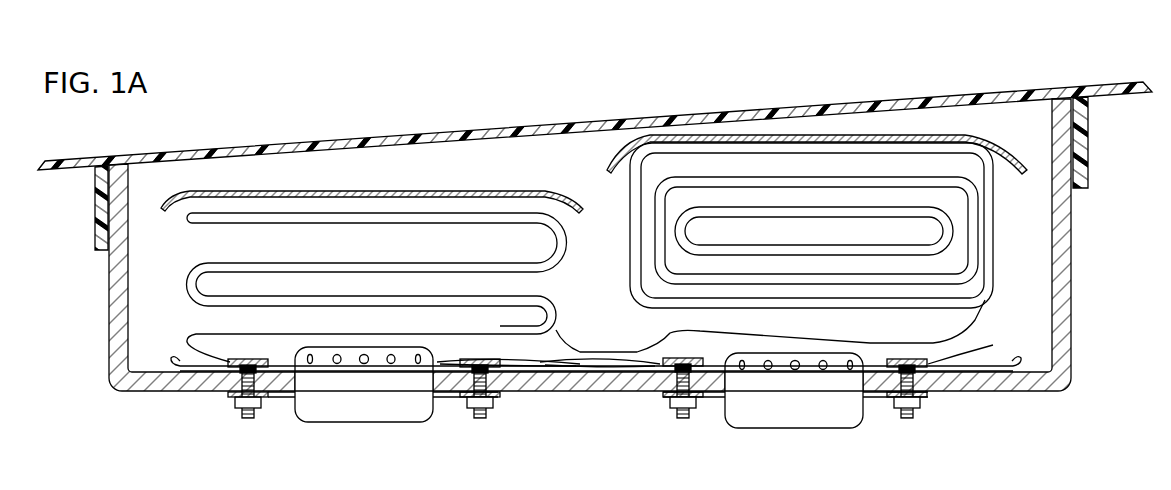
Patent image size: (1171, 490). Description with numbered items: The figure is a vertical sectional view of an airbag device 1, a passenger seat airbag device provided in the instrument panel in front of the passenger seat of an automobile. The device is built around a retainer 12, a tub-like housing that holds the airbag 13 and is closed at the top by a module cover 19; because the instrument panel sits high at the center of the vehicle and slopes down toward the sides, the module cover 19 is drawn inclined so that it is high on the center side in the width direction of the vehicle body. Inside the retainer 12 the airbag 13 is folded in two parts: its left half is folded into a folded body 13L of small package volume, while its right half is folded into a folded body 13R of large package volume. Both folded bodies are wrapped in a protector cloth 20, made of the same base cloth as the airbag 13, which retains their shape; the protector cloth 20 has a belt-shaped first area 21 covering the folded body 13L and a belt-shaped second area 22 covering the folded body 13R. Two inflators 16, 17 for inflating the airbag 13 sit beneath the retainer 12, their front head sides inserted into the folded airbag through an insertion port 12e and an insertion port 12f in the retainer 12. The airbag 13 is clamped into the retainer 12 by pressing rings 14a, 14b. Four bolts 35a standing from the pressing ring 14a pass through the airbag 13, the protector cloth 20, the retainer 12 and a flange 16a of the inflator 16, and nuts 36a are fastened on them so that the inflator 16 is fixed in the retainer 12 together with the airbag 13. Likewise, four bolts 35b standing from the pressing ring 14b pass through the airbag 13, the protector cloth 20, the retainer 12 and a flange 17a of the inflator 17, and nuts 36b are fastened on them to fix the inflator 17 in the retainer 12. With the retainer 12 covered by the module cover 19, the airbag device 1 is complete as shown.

The airbag device 1 is at (600, 267).
The retainer 12 is at (608, 290).
The insertion port 12e is at (312, 388).
The insertion port 12f is at (726, 388).
The airbag 13 is at (594, 252).
The folded body 13L is at (195, 265).
The folded body 13R is at (998, 277).
The pressing ring 14a is at (232, 360).
The pressing ring 14b is at (672, 358).
The inflator 16 is at (402, 425).
The flange 16a is at (294, 392).
The inflator 17 is at (826, 430).
The flange 17a is at (662, 394).
The module cover 19 is at (594, 110).
The protector cloth 20 is at (594, 285).
The first area 21 is at (422, 190).
The second area 22 is at (926, 136).
The bolt 35a is at (246, 407).
The bolt 35b is at (683, 416).
The nut 36a is at (231, 397).
The nut 36b is at (666, 401).